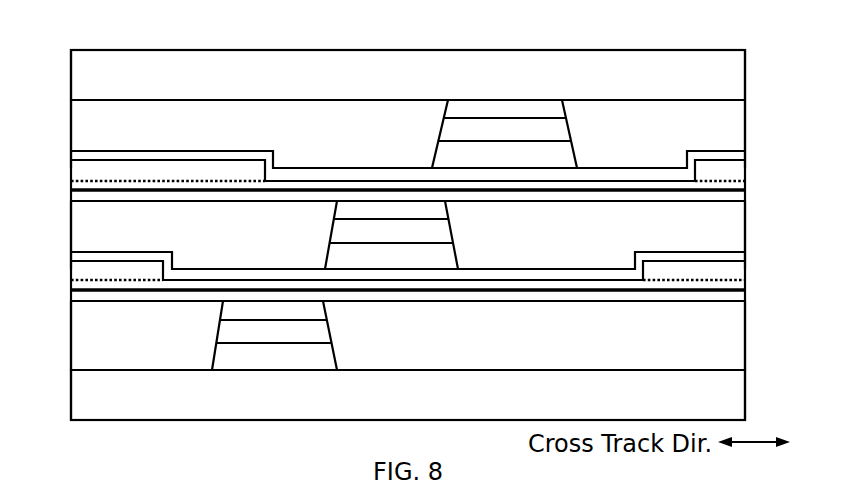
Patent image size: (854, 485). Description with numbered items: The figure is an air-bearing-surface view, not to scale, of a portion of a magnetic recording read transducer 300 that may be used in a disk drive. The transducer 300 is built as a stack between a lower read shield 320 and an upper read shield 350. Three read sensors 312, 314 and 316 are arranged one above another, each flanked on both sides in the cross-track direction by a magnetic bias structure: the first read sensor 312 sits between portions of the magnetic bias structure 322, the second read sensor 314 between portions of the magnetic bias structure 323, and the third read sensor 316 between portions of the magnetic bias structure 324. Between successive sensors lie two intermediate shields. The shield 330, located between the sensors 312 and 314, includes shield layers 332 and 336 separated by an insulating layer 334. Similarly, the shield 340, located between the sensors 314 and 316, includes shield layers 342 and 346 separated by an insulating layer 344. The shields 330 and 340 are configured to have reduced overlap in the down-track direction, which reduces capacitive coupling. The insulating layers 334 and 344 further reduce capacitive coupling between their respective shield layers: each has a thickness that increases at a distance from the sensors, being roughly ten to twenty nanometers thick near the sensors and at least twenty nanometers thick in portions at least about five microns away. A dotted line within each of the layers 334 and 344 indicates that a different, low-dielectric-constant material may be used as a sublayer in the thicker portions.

The magnetic recording read transducer 300 is at (60, 45).
The read shield 350 is at (408, 75).
The read shield 320 is at (408, 395).
The magnetic bias structure 324 is at (408, 134).
The magnetic bias structure 323 is at (408, 235).
The magnetic bias structure 322 is at (408, 335).
The read sensor 316 is at (529, 84).
The read sensor 314 is at (377, 288).
The read sensor 312 is at (252, 388).
The shield 340 is at (674, 152).
The shield layer 346 is at (716, 151).
The insulating layer 344 is at (747, 175).
The shield layer 342 is at (745, 197).
The shield layer 336 is at (747, 255).
The insulating layer 334 is at (747, 279).
The shield layer 332 is at (693, 304).
The shield 330 is at (679, 322).